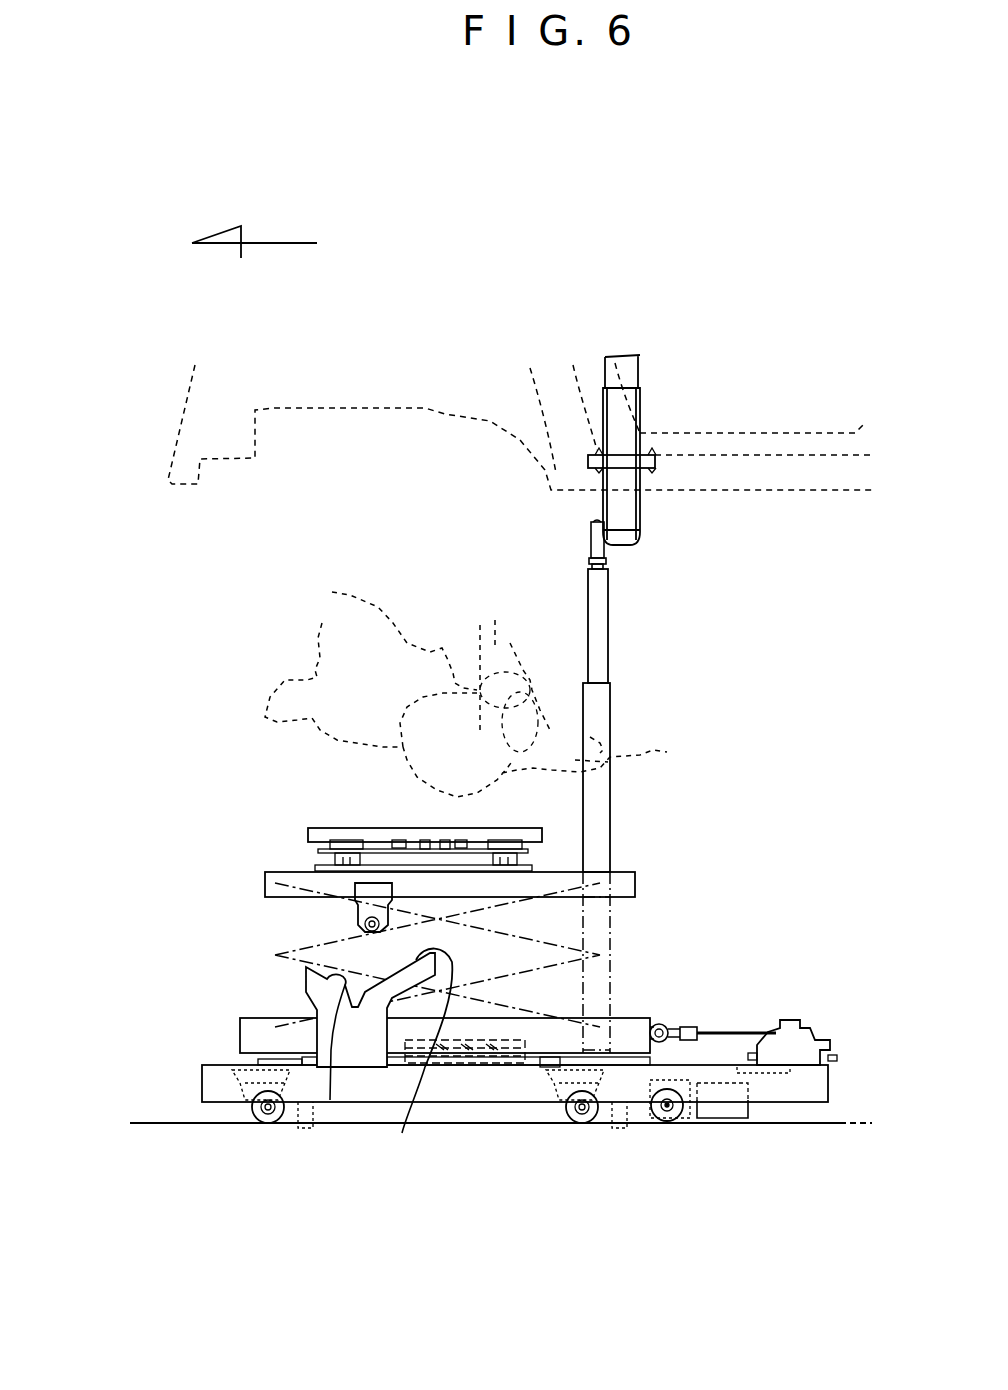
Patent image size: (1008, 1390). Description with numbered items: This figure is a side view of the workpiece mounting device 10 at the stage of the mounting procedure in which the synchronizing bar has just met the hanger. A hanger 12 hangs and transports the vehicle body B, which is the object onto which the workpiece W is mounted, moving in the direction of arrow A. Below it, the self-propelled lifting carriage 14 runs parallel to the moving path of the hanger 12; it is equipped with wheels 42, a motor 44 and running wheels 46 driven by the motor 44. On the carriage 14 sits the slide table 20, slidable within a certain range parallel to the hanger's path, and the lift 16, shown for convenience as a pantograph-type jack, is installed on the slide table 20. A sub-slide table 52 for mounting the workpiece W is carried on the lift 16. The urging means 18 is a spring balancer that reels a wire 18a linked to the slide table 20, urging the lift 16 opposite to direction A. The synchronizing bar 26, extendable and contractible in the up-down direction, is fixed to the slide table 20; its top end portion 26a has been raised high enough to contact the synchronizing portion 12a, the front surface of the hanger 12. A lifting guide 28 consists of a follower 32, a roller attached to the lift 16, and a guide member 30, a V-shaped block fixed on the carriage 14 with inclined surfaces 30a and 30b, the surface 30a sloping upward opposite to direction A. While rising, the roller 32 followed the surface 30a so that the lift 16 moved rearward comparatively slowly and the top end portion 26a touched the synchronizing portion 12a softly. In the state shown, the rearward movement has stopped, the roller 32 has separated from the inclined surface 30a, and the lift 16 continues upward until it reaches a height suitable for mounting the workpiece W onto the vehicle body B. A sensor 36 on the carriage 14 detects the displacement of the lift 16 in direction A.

The workpiece mounting device 10 is at (803, 803).
The hanger 12 is at (640, 372).
The synchronizing portion 12a is at (595, 528).
The self-propelled lifting carriage 14 is at (202, 1097).
The lift 16 is at (308, 836).
The urging means 18 is at (813, 1020).
The wire 18a is at (742, 1033).
The slide table 20 is at (240, 1042).
The synchronizing bar 26 is at (607, 635).
The top end portion 26a is at (590, 553).
The lifting guide 28 is at (351, 1068).
The guide member 30 is at (306, 987).
The inclined surface 30a is at (402, 1133).
The inclined surface 30b is at (330, 1100).
The follower 32 is at (363, 923).
The sensor 36 is at (440, 1065).
The wheels 42 is at (268, 1124).
The motor 44 is at (718, 1120).
The running wheels 46 is at (662, 1121).
The sub-slide table 52 is at (322, 830).
The direction of movement of the hanger A is at (273, 243).
The vehicle body B is at (195, 412).
The workpiece W is at (466, 682).